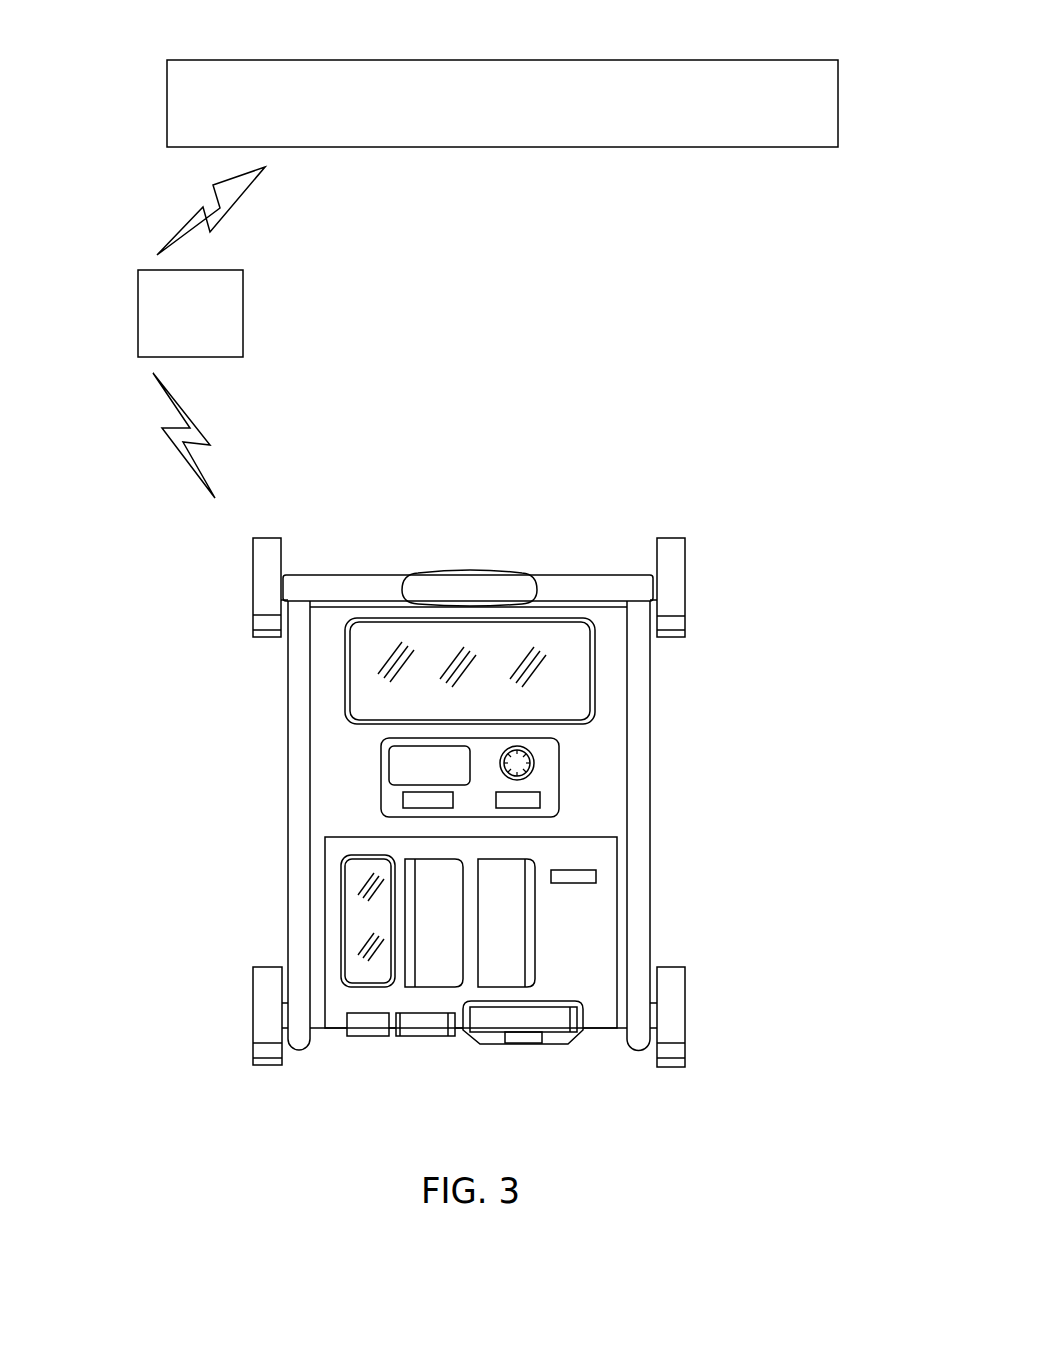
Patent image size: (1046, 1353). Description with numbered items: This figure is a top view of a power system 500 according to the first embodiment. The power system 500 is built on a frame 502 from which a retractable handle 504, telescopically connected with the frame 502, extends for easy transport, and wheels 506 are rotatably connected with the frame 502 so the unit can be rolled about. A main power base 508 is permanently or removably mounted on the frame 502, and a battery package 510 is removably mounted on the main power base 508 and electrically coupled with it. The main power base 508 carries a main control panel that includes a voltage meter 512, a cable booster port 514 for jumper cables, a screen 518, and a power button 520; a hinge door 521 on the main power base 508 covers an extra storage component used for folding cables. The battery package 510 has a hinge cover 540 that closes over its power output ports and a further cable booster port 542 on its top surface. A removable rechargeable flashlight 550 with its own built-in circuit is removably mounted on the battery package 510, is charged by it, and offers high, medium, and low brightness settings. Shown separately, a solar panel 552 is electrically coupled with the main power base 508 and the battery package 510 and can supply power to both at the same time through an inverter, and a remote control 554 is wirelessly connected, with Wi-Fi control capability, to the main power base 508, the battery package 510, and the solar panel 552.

The power system 500 is at (95, 58).
The frame 502 is at (298, 686).
The retractable handle 504 is at (326, 590).
The wheels 506 is at (267, 570).
The main power base 508 is at (607, 773).
The battery package 510 is at (577, 918).
The voltage meter 512 is at (517, 763).
The cable booster port 514 is at (540, 800).
The screen 518 is at (417, 768).
The power button 520 is at (425, 800).
The hinge door 521 is at (570, 677).
The hinge cover 540 is at (372, 914).
The cable booster port 542 is at (583, 877).
The removable rechargeable flashlight 550 is at (557, 1035).
The solar panel 552 is at (502, 103).
The remote control 554 is at (190, 313).